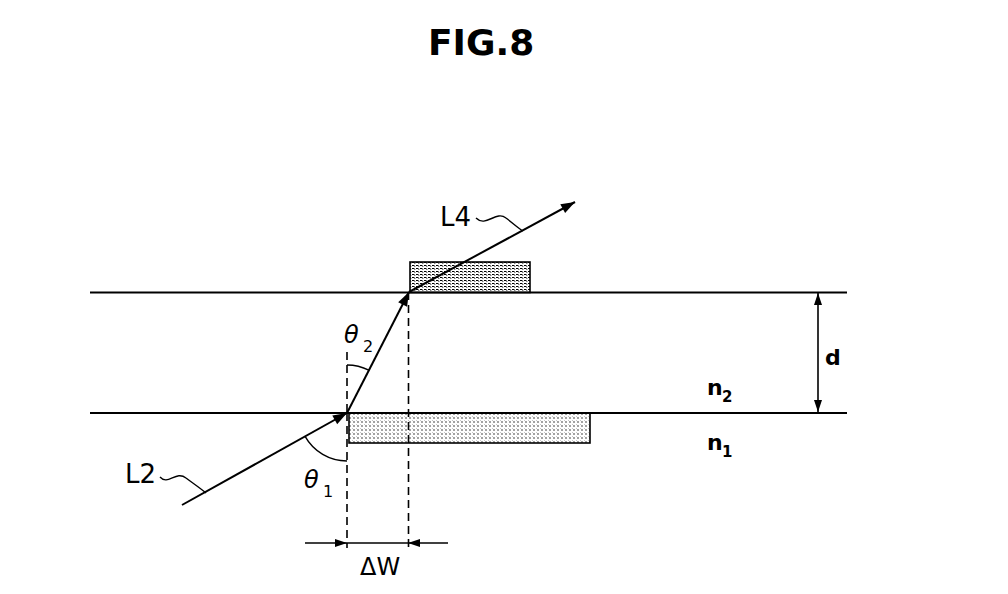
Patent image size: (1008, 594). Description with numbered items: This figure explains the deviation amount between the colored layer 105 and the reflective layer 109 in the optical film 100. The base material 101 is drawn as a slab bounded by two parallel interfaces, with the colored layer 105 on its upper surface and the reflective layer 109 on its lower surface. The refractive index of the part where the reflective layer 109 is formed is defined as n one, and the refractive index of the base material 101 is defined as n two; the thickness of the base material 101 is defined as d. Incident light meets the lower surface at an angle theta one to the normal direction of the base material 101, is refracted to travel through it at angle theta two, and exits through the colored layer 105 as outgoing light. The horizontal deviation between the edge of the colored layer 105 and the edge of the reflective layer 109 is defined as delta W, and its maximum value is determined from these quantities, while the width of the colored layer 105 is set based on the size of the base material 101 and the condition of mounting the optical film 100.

The optical film 100 is at (496, 132).
The base material 101 is at (93, 368).
The colored layer 105 is at (530, 270).
The reflective layer 109 is at (558, 443).